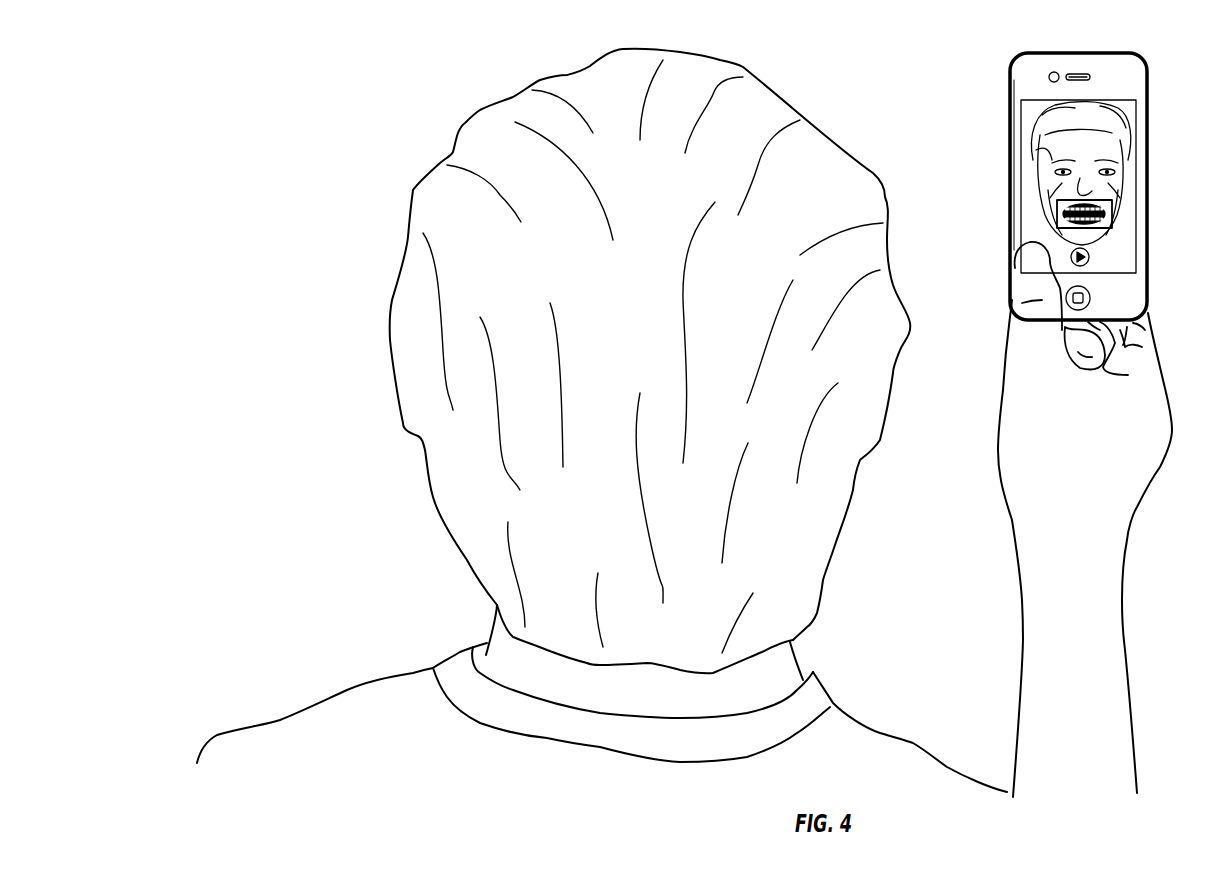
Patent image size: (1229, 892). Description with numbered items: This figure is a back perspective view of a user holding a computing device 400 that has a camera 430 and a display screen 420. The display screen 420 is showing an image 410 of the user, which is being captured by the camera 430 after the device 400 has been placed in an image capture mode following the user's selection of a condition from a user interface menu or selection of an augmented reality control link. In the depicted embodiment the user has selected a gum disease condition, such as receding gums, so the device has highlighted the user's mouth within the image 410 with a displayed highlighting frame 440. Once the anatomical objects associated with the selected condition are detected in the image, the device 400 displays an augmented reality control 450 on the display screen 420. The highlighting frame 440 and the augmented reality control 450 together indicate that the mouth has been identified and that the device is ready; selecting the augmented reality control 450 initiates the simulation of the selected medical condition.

The computing device 400 is at (1078, 176).
The image 410 is at (1050, 238).
The display screen 420 is at (1078, 173).
The camera 430 is at (1048, 73).
The highlighting frame 440 is at (1113, 212).
The augmented reality control 450 is at (1090, 257).